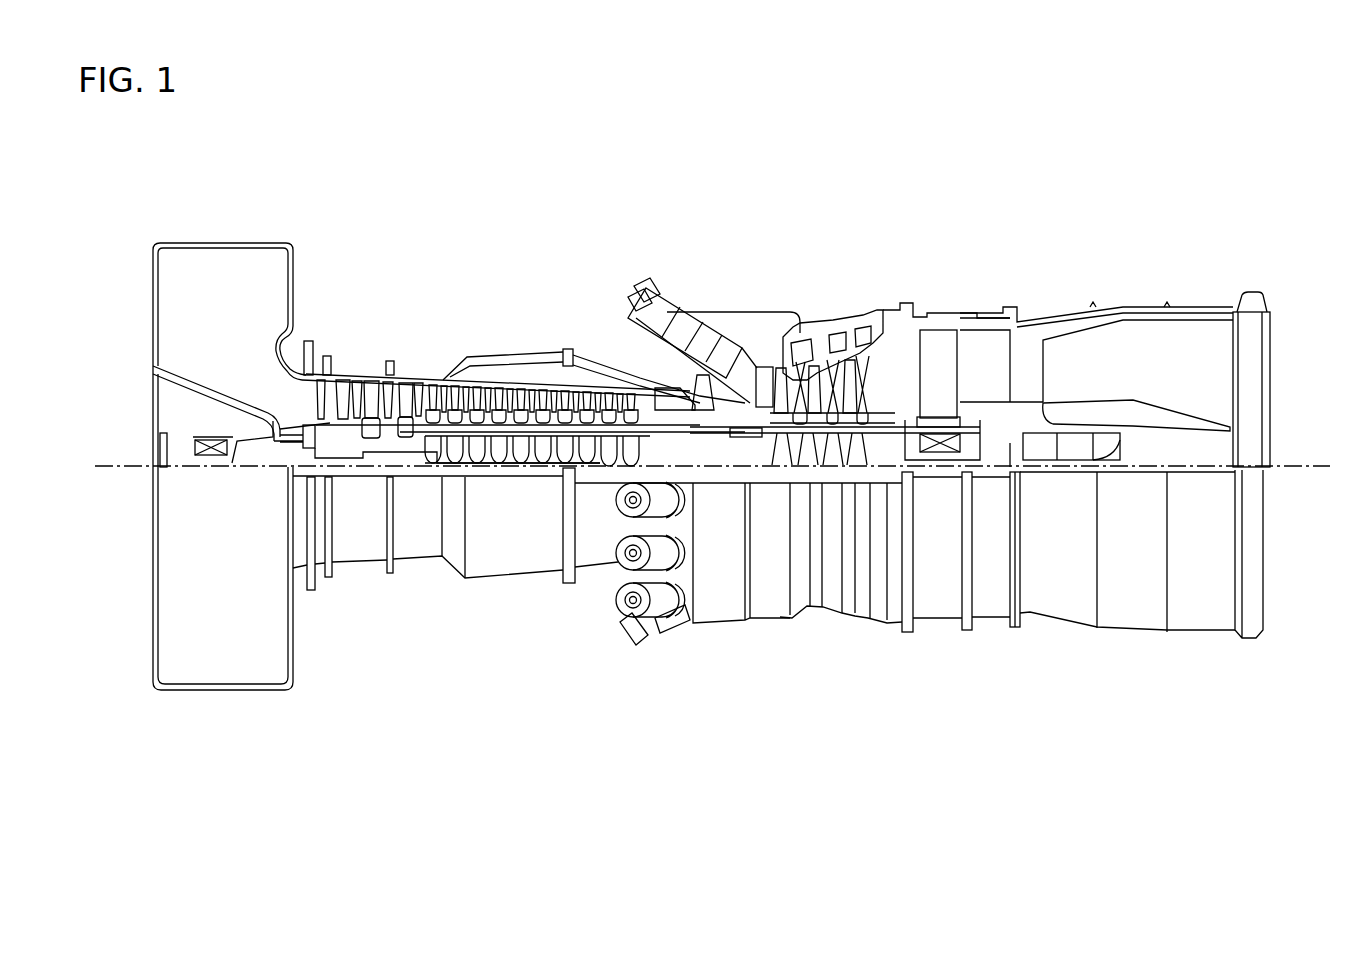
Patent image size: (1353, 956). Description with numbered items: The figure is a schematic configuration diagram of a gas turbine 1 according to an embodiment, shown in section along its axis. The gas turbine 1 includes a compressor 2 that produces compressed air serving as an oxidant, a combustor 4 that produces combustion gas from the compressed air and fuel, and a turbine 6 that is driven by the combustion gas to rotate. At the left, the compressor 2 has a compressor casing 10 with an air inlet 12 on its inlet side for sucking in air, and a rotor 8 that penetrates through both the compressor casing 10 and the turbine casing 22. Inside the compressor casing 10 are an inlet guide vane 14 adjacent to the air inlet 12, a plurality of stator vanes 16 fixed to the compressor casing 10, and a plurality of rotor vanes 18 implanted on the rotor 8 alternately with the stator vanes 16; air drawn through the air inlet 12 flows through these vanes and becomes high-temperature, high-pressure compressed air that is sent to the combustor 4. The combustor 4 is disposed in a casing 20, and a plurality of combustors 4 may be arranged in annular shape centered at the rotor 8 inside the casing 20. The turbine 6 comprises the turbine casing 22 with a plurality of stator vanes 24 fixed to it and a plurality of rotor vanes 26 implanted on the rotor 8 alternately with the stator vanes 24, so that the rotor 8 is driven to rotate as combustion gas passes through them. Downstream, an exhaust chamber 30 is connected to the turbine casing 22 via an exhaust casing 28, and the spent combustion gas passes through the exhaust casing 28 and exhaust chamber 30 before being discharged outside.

The gas turbine 1 is at (736, 180).
The compressor 2 is at (388, 295).
The combustor 4 is at (648, 272).
The turbine 6 is at (917, 280).
The rotor 8 is at (683, 415).
The compressor casing 10 is at (367, 385).
The air inlet 12 is at (187, 324).
The inlet guide vane 14 is at (327, 388).
The stator vanes 16 is at (373, 377).
The rotor vanes 18 is at (347, 387).
The casing 20 is at (637, 325).
The turbine casing 22 is at (848, 320).
The stator vanes 24 is at (800, 367).
The rotor vanes 26 is at (782, 373).
The exhaust casing 28 is at (943, 313).
The exhaust chamber 30 is at (1197, 307).